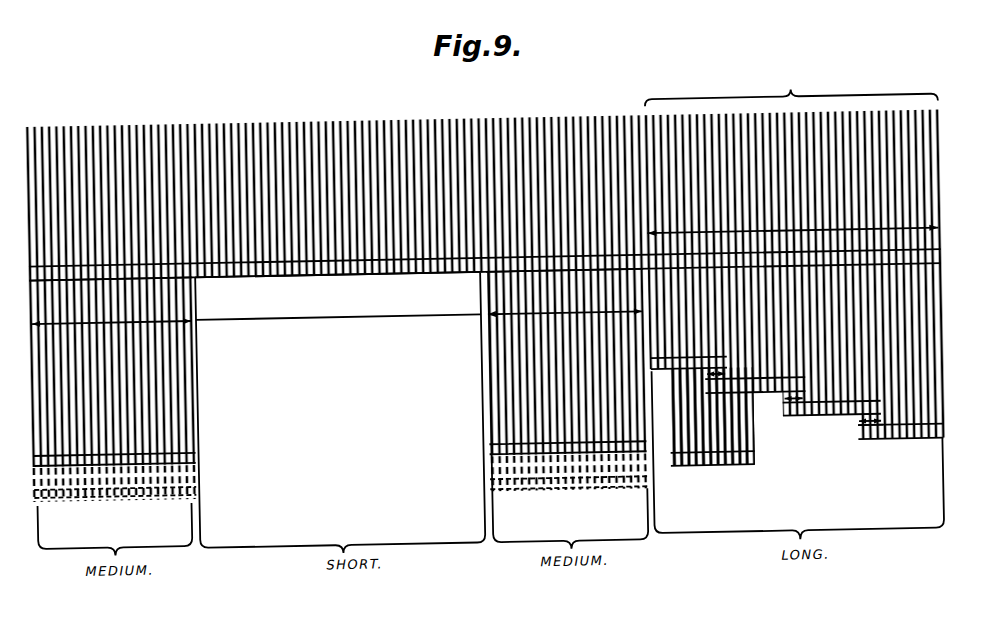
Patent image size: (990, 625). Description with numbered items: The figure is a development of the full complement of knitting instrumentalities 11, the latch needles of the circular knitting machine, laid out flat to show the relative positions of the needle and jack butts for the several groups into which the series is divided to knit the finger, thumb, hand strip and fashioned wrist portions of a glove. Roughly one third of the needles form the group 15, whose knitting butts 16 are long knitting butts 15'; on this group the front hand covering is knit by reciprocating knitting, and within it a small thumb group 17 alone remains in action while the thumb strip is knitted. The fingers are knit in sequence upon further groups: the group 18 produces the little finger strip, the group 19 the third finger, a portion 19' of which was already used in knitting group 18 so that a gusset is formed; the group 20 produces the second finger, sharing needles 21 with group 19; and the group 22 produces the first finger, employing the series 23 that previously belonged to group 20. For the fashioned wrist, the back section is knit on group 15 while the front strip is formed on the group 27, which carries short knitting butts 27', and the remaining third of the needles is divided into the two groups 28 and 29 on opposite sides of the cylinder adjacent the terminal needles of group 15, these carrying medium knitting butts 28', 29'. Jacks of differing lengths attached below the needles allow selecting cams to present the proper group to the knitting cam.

The knitting instrumentalities 11 is at (302, 150).
The group of needles 15 is at (795, 266).
The long knitting butts 15' is at (814, 211).
The knitting butts 16 is at (941, 268).
The thumb group of needles 17 is at (724, 479).
The group of needles 18 is at (890, 456).
The group of needles 19 is at (832, 423).
The portion of needles 19' is at (866, 451).
The group of needles 20 is at (767, 407).
The portion of needles 21 is at (794, 431).
The group of needles 22 is at (659, 383).
The series of needles 23 is at (716, 388).
The group of needles 27 is at (339, 334).
The short knitting butts 27' is at (338, 280).
The group of needles 28 is at (544, 362).
The medium knitting butts 28' is at (542, 280).
The group of needles 29 is at (133, 372).
The medium knitting butts 29' is at (137, 291).